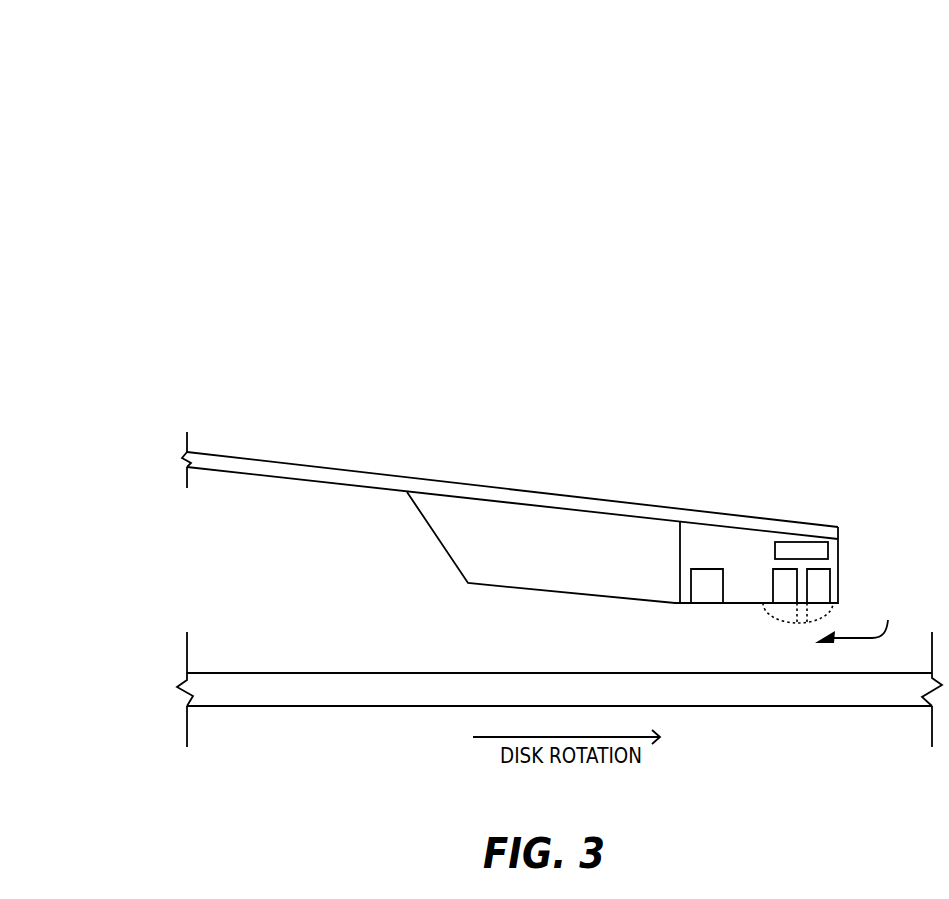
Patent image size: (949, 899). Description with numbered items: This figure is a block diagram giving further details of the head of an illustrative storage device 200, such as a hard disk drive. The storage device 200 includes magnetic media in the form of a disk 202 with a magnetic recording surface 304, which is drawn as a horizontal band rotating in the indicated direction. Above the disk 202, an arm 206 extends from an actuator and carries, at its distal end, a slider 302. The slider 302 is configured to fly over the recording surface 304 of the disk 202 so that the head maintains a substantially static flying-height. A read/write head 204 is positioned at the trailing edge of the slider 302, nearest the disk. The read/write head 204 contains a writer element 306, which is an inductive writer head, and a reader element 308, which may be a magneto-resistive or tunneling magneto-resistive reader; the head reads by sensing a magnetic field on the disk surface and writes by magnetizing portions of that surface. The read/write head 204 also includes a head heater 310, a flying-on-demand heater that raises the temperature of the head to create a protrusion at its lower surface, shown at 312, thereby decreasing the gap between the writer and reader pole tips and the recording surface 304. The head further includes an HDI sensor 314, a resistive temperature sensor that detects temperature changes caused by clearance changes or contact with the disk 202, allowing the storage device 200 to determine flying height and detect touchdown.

The storage device 200 is at (68, 66).
The disk 202 is at (568, 700).
The read/write head 204 is at (725, 559).
The arm 206 is at (463, 492).
The slider 302 is at (553, 556).
The recording surface 304 is at (365, 674).
The writer element 306 is at (817, 587).
The reader element 308 is at (785, 587).
The head heater 310 is at (800, 552).
The protrusion 312 is at (858, 619).
The HDI sensor 314 is at (707, 585).